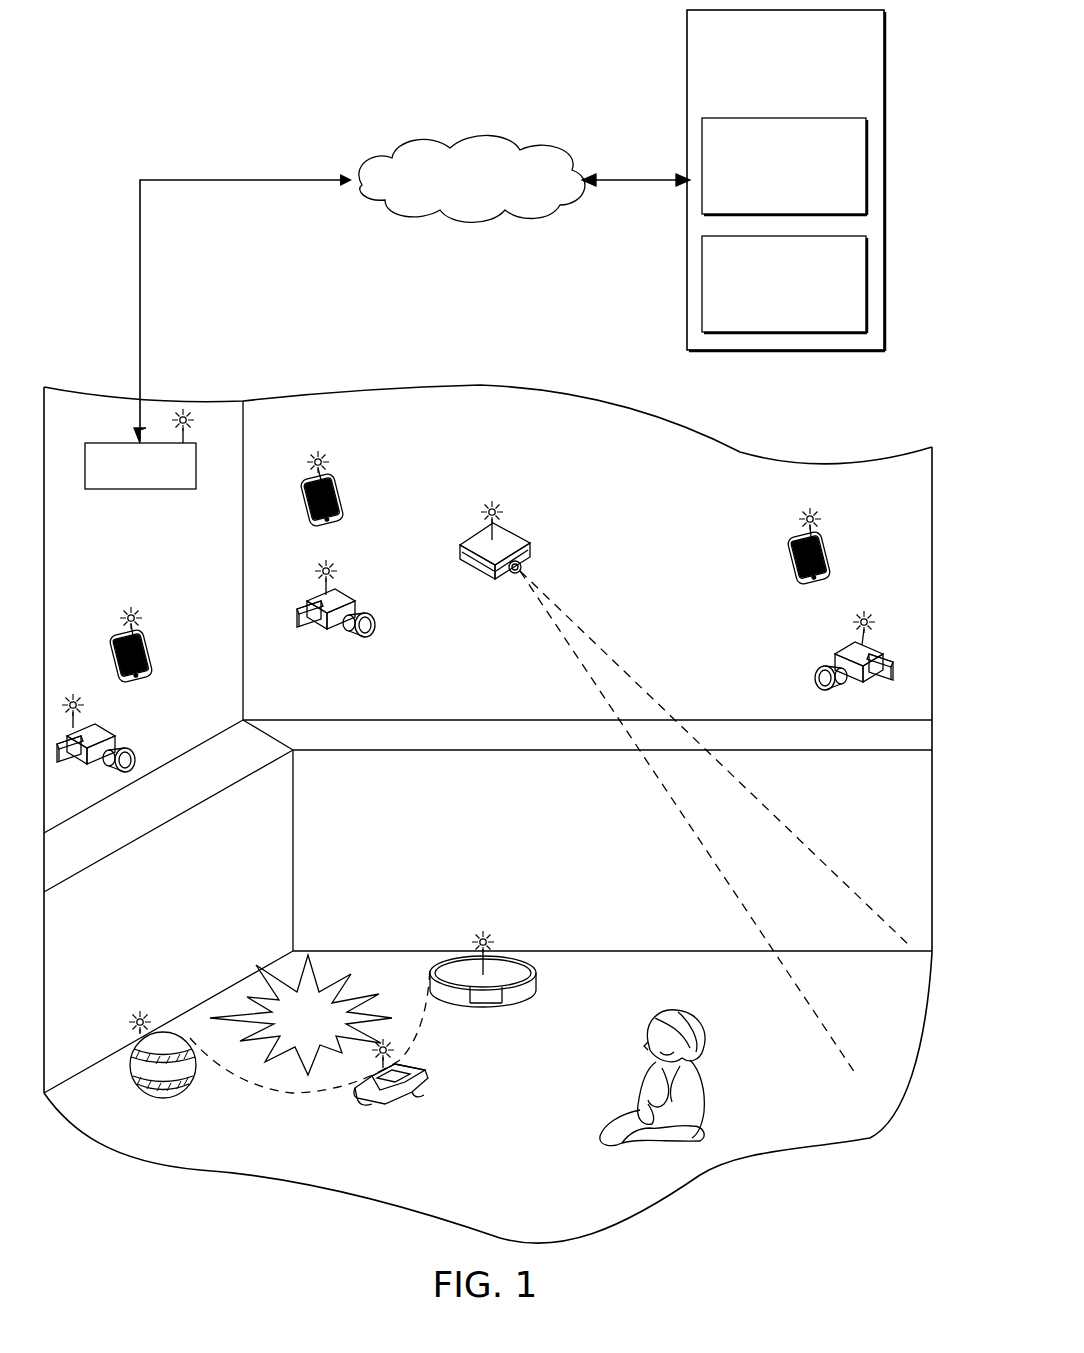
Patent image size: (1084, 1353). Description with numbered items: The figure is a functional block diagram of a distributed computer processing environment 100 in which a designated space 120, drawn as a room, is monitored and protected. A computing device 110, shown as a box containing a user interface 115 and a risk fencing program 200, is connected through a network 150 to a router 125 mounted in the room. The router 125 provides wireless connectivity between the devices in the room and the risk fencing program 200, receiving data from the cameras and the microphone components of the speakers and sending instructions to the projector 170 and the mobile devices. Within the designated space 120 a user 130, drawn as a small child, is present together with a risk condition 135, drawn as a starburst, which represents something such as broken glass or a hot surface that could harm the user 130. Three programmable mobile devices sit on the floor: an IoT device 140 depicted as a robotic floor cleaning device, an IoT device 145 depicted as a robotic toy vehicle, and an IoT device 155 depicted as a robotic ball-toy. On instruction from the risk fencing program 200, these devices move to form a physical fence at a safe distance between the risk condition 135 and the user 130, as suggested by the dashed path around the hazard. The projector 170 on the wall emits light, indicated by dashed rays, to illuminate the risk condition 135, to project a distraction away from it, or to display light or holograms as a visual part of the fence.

The distributed computer processing environment 100 is at (184, 52).
The computing device 110 is at (765, 99).
The user interface 115 is at (764, 319).
The designated space 120 is at (842, 1126).
The router 125 is at (116, 441).
The user 130 is at (702, 1076).
The risk condition 135 is at (335, 988).
The IoT device 140 is at (518, 1003).
The IoT device 145 is at (400, 1098).
The network 150 is at (385, 148).
The IoT device 155 is at (162, 1098).
The projector 170 is at (516, 536).
The risk fencing program 200 is at (764, 202).